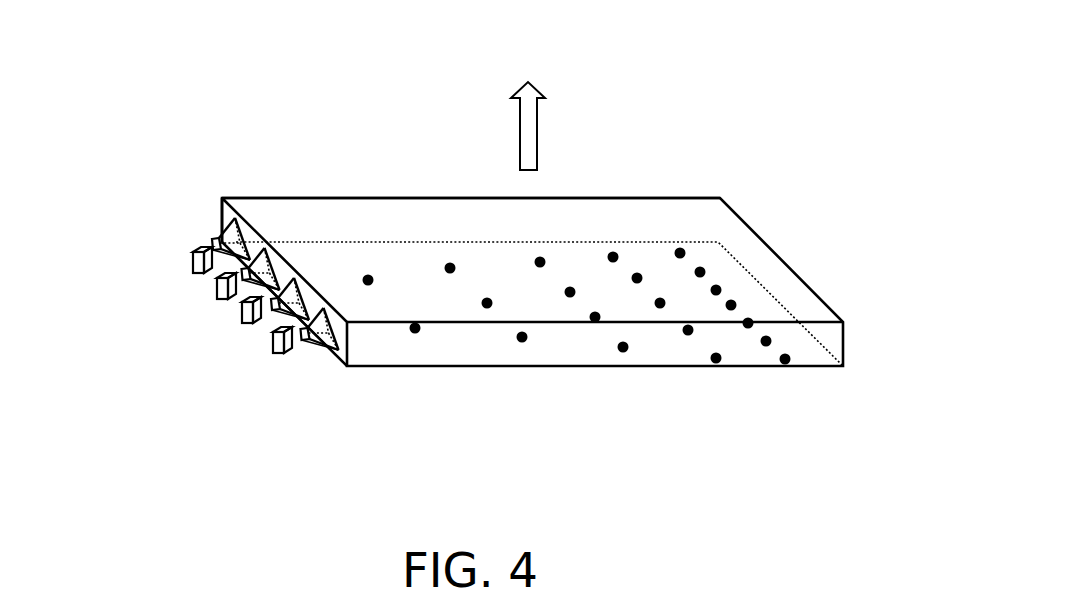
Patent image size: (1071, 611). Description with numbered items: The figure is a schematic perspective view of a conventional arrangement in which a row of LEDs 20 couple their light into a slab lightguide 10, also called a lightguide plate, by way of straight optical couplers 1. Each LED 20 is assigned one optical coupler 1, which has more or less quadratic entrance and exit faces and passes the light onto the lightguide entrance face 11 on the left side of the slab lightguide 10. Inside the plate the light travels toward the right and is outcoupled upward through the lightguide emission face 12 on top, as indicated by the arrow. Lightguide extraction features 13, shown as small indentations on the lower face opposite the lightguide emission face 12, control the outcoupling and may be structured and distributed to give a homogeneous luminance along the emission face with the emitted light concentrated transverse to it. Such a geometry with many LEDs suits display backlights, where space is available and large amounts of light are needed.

The optical coupler 1 is at (213, 238).
The slab lightguide 10 is at (724, 122).
The lightguide entrance face 11 is at (227, 212).
The lightguide emission face 12 is at (400, 207).
The lightguide extraction features 13 is at (682, 252).
The LEDs 20 is at (273, 344).